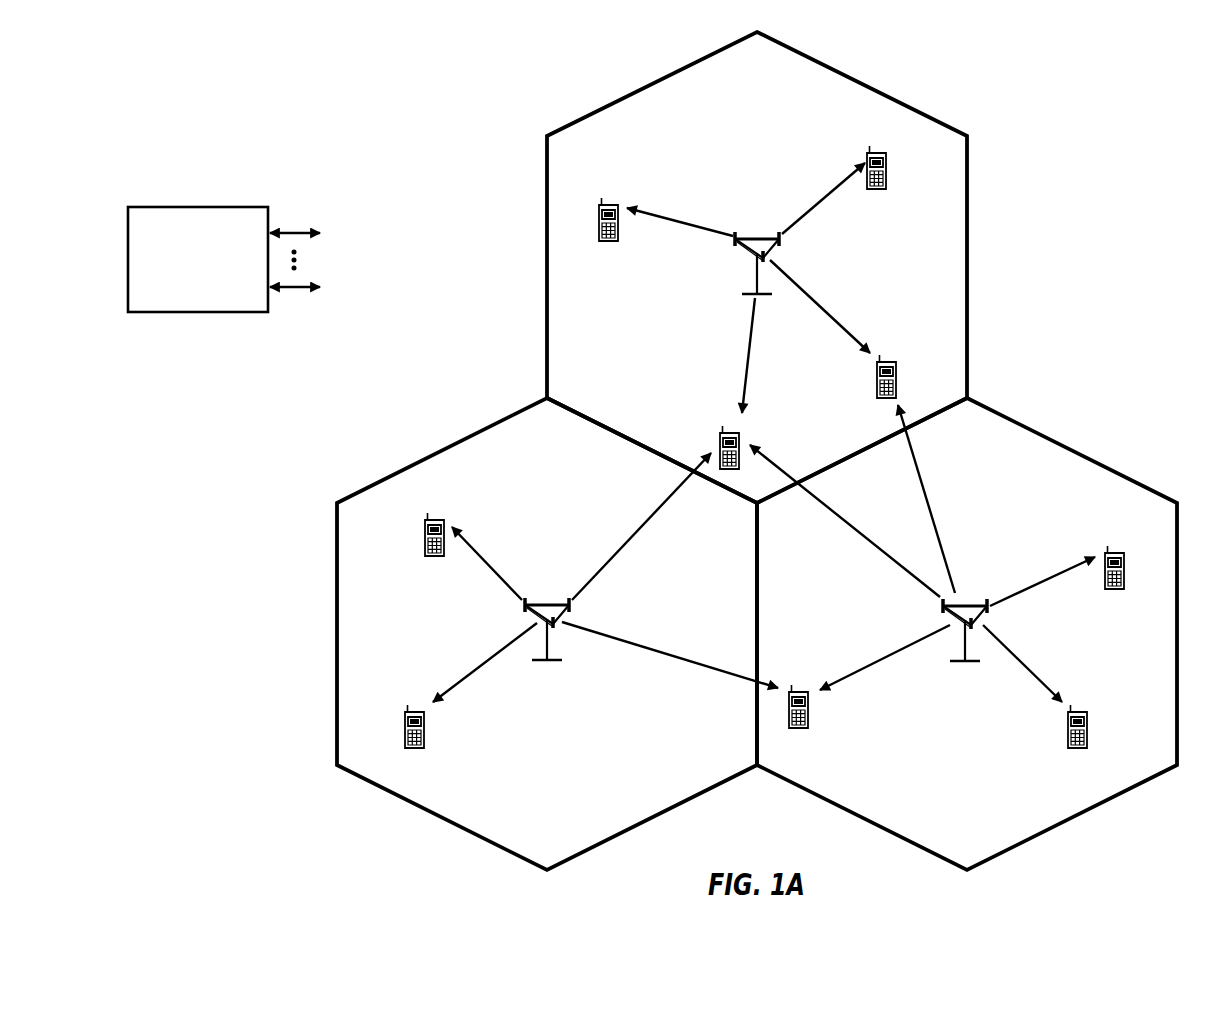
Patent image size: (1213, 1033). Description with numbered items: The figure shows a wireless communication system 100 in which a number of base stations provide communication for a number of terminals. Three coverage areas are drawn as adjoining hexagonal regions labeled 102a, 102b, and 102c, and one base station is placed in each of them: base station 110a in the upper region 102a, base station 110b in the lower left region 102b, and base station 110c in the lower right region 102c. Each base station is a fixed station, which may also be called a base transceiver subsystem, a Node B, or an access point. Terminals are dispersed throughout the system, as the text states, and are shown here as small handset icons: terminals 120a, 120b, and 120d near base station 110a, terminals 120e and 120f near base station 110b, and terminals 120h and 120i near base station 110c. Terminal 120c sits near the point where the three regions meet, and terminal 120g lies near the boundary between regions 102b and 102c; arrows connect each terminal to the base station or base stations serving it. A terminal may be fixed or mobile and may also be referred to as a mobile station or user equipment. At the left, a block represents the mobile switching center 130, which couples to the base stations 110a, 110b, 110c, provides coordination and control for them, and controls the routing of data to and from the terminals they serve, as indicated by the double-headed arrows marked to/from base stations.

The wireless communication system 100 is at (1107, 65).
The cell 102a is at (863, 84).
The cell 102b is at (440, 451).
The cell 102c is at (1072, 450).
The base station 110a is at (755, 234).
The base station 110b is at (546, 600).
The base station 110c is at (969, 600).
The terminal 120a is at (878, 152).
The terminal 120b is at (611, 204).
The terminal 120c is at (728, 432).
The terminal 120d is at (890, 361).
The terminal 120e is at (436, 518).
The terminal 120f is at (417, 710).
The terminal 120g is at (799, 691).
The terminal 120h is at (1078, 711).
The terminal 120i is at (1116, 552).
The mobile switching center 130 is at (189, 206).